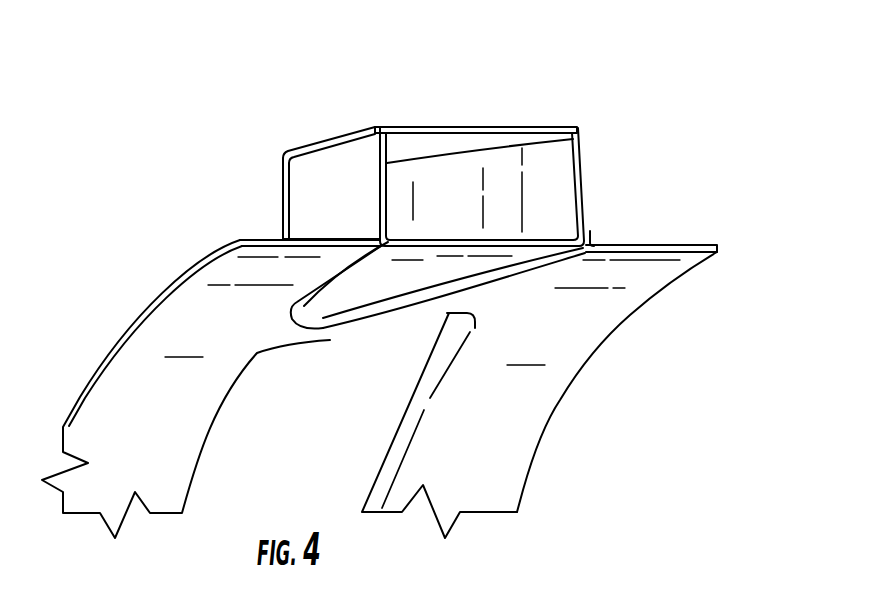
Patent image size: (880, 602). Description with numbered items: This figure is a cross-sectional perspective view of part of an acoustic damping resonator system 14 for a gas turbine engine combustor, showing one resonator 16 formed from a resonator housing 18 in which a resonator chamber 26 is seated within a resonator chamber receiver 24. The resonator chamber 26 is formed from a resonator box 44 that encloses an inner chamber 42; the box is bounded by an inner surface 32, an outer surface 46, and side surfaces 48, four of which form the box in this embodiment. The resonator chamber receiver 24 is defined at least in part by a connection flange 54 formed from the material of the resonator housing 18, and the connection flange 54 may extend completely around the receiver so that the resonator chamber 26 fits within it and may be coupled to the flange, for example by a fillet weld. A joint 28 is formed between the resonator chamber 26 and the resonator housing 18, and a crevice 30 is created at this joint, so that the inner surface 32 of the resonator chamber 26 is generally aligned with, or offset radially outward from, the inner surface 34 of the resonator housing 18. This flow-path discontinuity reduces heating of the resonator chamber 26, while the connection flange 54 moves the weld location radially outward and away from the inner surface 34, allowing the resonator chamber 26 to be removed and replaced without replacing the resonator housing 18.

The acoustic damping resonator system 14 is at (650, 76).
The resonator 16 is at (513, 125).
The resonator housing 18 is at (673, 248).
The resonator chamber receiver 24 is at (503, 277).
The resonator chamber 26 is at (587, 137).
The joint 28 is at (587, 230).
The crevice 30 is at (290, 316).
The inner surface of the resonator chamber 32 is at (385, 294).
The inner surface of the resonator housing 34 is at (241, 317).
The inner chamber 42 is at (468, 200).
The resonator box 44 is at (447, 130).
The outer surface 46 is at (478, 128).
The side surface 48 is at (285, 173).
The connection flange 54 is at (358, 232).